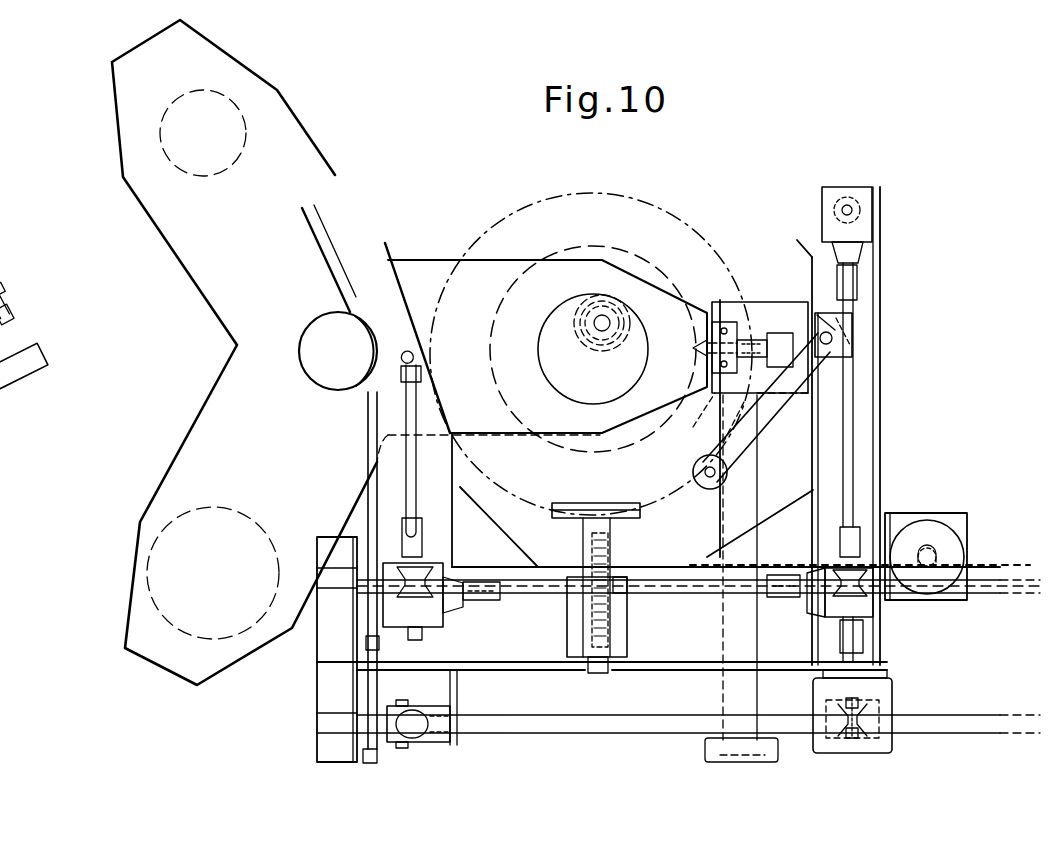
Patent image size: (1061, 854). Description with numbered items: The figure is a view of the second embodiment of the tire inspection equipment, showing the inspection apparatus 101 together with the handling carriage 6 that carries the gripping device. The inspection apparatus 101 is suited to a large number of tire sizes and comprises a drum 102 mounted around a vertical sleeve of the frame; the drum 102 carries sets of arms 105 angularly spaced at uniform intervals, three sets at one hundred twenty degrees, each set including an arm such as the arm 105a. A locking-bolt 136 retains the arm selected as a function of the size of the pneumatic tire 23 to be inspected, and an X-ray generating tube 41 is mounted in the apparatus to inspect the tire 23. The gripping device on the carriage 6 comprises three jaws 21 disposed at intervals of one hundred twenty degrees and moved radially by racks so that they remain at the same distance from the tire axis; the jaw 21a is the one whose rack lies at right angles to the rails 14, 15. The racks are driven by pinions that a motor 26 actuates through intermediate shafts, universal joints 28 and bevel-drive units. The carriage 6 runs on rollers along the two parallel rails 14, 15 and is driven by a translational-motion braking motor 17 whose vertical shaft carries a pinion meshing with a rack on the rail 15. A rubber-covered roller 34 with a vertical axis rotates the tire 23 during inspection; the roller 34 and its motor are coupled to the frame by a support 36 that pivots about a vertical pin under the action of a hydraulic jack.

The drum 102 is at (298, 100).
The sets of arms 105 is at (197, 257).
The inspection apparatus 101 is at (416, 170).
The pneumatic tire 23 is at (675, 213).
The arm 105a is at (497, 268).
The jaws 21 is at (450, 280).
The X-ray generating tube 41 is at (590, 343).
The locking-bolt 136 is at (697, 343).
The jaw 21a is at (597, 507).
The rubber-covered roller 34 is at (700, 488).
The support 36 is at (760, 410).
The universal joints 28 is at (782, 473).
The translational-motion braking motor 17 is at (950, 543).
The rail 15 is at (1013, 577).
The handling carriage 6 is at (915, 617).
The motor 26 is at (887, 688).
The rail 14 is at (990, 725).